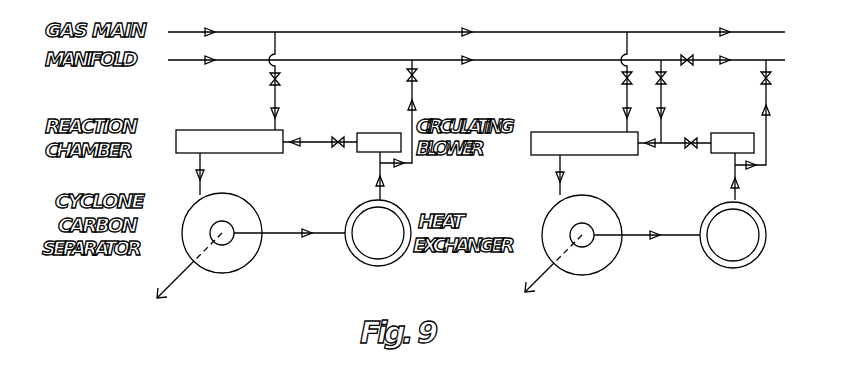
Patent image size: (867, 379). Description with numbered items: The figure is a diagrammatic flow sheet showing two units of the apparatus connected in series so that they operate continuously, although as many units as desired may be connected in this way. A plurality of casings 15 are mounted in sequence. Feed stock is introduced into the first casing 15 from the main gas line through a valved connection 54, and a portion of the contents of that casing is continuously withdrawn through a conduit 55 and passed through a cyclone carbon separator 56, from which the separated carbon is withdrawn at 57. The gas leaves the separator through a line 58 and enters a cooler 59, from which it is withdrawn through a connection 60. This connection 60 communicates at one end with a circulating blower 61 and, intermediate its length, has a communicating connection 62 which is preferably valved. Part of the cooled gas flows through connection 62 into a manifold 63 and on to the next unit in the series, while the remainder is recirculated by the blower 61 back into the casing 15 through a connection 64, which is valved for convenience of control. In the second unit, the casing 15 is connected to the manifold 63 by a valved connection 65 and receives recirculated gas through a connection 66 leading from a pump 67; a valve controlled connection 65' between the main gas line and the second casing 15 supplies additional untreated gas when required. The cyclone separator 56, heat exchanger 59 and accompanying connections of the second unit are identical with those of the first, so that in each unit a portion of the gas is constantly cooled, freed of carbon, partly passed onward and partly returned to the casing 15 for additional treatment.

The casing 15 is at (245, 143).
The valved connection 54 is at (273, 92).
The conduit 55 is at (200, 190).
The cyclone carbon separator 56 is at (214, 262).
The carbon withdrawal 57 is at (176, 287).
The line 58 is at (285, 237).
The cooler 59 is at (386, 262).
The connection 60 is at (385, 170).
The circulating blower 61 is at (378, 140).
The communicating connection 62 is at (413, 92).
The manifold 63 is at (510, 62).
The connection 64 is at (320, 144).
The valved connection 65 is at (684, 101).
The valve controlled connection 65' is at (606, 82).
The connection 66 is at (661, 148).
The pump 67 is at (733, 140).